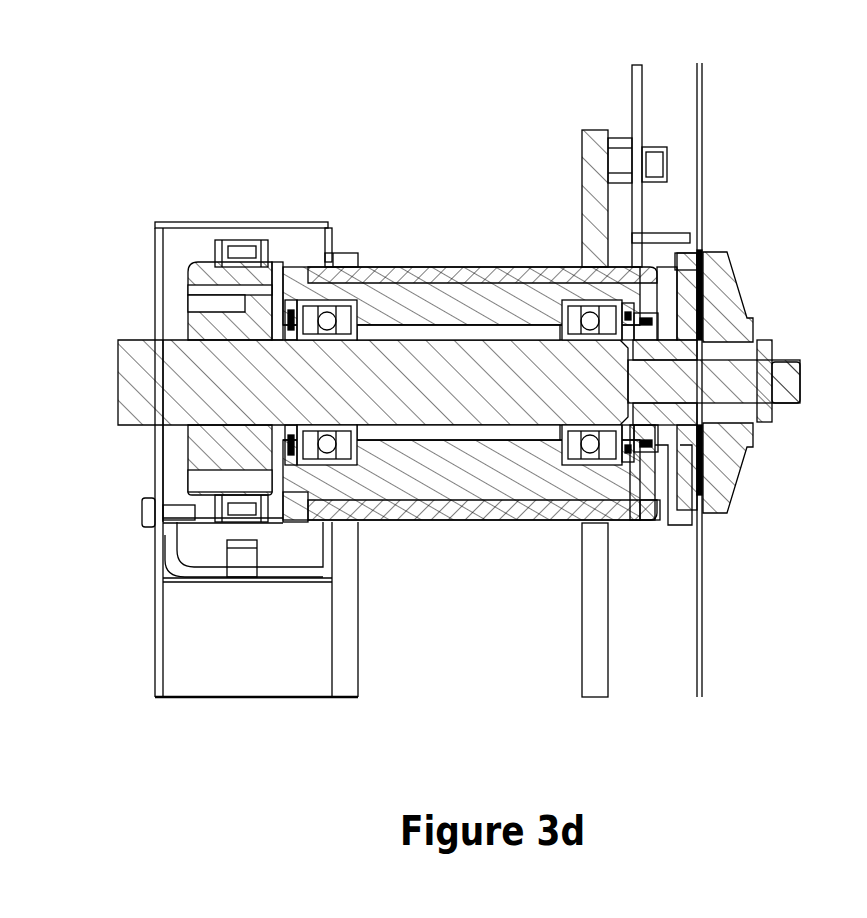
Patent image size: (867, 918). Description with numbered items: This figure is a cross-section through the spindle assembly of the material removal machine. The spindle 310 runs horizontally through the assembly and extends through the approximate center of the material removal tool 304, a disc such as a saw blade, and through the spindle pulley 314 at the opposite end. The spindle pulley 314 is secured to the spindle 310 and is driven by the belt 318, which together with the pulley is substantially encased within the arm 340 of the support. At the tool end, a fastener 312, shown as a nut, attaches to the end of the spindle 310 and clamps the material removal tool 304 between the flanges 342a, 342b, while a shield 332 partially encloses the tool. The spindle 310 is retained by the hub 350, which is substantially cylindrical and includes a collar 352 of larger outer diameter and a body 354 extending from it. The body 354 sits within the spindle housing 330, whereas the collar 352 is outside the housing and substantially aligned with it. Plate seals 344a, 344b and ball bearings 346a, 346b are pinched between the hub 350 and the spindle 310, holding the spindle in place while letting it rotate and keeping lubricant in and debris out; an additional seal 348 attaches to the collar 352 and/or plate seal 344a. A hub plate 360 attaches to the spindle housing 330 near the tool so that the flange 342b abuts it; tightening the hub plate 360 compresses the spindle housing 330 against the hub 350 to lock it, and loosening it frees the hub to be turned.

The material removal tool 304 is at (702, 70).
The spindle 310 is at (425, 400).
The fastener 312 is at (772, 355).
The spindle pulley 314 is at (190, 330).
The belt 318 is at (232, 250).
The spindle housing 330 is at (478, 285).
The shield 332 is at (632, 85).
The arm 340 is at (160, 225).
The flange 342a is at (727, 287).
The flange 342b is at (680, 520).
The plate seal 344a is at (327, 312).
The plate seal 344b is at (593, 455).
The ball bearing 346a is at (355, 265).
The ball bearing 346b is at (605, 455).
The additional seal 348 is at (274, 290).
The hub 350 is at (405, 300).
The collar 352 is at (297, 505).
The body 354 is at (576, 250).
The hub plate 360 is at (645, 515).